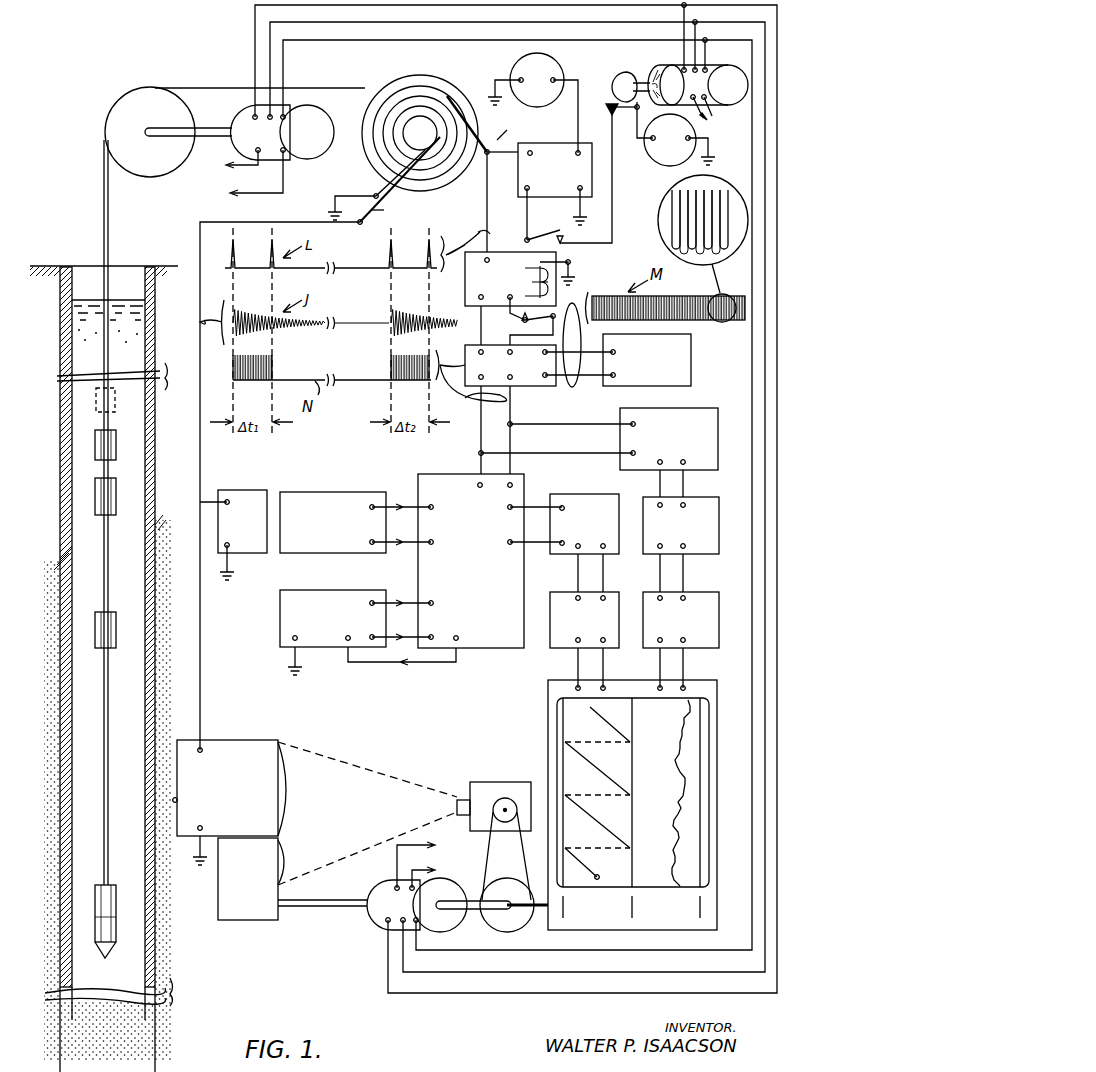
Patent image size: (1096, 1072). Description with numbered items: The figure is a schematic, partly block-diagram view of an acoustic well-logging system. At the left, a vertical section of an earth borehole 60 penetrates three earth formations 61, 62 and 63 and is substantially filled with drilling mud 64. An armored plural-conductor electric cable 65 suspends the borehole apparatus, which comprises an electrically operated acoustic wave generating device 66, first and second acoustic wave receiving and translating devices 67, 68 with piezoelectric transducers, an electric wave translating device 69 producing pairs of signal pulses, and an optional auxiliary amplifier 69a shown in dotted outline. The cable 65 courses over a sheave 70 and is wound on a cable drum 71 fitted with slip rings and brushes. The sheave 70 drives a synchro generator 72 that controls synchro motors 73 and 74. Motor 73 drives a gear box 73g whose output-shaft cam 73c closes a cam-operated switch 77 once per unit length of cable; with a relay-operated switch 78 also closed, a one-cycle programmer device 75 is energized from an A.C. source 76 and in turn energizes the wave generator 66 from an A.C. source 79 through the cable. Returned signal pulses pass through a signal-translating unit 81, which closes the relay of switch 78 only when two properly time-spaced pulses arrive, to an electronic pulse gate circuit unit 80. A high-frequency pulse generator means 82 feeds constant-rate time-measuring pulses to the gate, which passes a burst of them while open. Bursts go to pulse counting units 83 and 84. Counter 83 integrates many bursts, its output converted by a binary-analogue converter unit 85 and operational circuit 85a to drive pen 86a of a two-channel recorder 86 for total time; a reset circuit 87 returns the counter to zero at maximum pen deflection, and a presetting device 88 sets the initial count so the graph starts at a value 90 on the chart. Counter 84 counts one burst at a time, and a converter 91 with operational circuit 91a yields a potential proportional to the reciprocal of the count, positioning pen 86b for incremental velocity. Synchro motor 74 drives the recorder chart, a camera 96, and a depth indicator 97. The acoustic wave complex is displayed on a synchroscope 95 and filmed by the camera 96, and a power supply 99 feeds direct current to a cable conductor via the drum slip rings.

The earth borehole 60 is at (85, 282).
The earth formation 61 is at (35, 455).
The earth formation 62 is at (35, 655).
The earth formation 63 is at (35, 922).
The drilling mud 64 is at (125, 300).
The armored plural-conductor electric cable 65 is at (108, 230).
The acoustic wave generating device 66 is at (113, 900).
The first acoustic wave receiving and translating device 67 is at (113, 626).
The second acoustic wave receiving and translating device 68 is at (113, 495).
The electric wave translating device 69 is at (113, 442).
The auxiliary amplifier 69a is at (95, 402).
The sheave 70 is at (118, 103).
The cable drum 71 is at (417, 74).
The synchro generator 72 is at (305, 150).
The synchro motor 73 is at (721, 108).
The cam 73c is at (620, 82).
The gear box 73g is at (666, 68).
The synchro motor 74 is at (452, 918).
The one-cycle programmer device 75 is at (555, 160).
The A.C. source 76 is at (652, 152).
The cam-operated switch 77 is at (612, 107).
The relay-operated switch 78 is at (565, 243).
The A.C. source 79 is at (548, 65).
The electronic pulse gate circuit unit 80 is at (526, 388).
The signal-translating unit 81 is at (520, 298).
The high-frequency pulse generator means 82 is at (647, 360).
The pulse counting unit 83 is at (490, 561).
The pulse counting unit 84 is at (598, 452).
The binary-analogue converter unit 85 is at (584, 543).
The operational circuit 85a is at (584, 640).
The two-channel recorder 86 is at (548, 735).
The recorder pen 86a is at (588, 705).
The recorder pen 86b is at (685, 704).
The reset circuit 87 is at (368, 632).
The presetting device 88 is at (355, 522).
The starting value on chart 90 is at (598, 876).
The converter 91 is at (681, 544).
The operational circuit 91a is at (681, 640).
The synchroscope 95 is at (315, 812).
The camera 96 is at (485, 786).
The depth indicator 97 is at (237, 910).
The power supply 99 is at (233, 535).